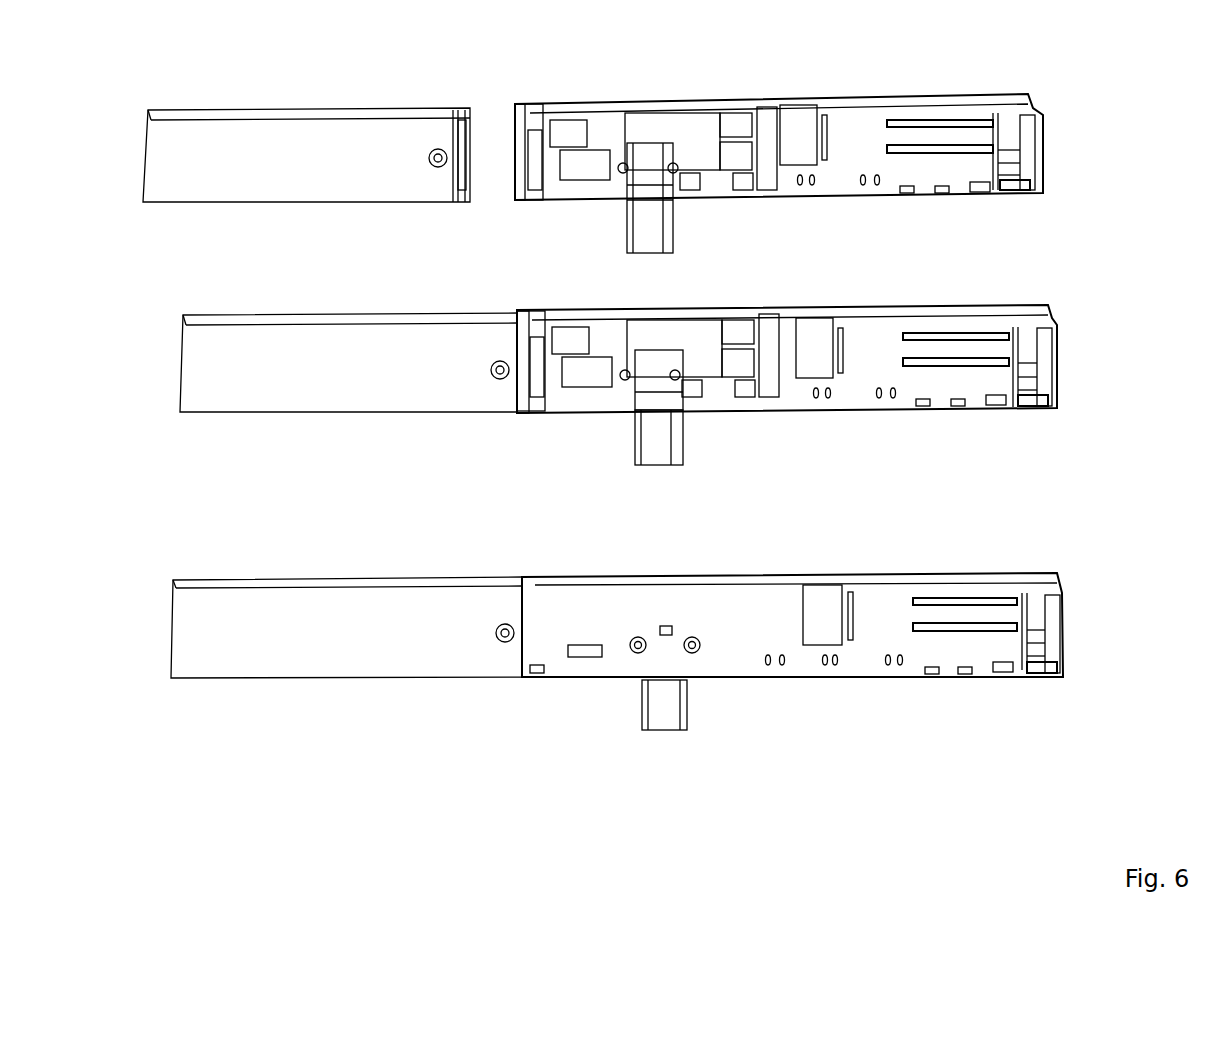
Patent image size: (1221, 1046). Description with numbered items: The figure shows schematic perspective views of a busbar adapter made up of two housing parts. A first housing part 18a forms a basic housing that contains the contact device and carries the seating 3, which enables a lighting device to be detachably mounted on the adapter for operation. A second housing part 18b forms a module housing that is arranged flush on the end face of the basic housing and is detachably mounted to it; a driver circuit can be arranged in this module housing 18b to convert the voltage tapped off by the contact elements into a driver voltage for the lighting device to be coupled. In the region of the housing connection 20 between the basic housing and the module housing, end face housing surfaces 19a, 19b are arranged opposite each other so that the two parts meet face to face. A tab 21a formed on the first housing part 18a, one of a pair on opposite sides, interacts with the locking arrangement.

The seating 3 is at (667, 443).
The first housing part 18a is at (1030, 107).
The second housing part 18b is at (251, 117).
The end face housing surface 19a is at (517, 160).
The end face housing surface 19b is at (468, 117).
The housing connection 20 is at (518, 413).
The tab 21a is at (1035, 400).